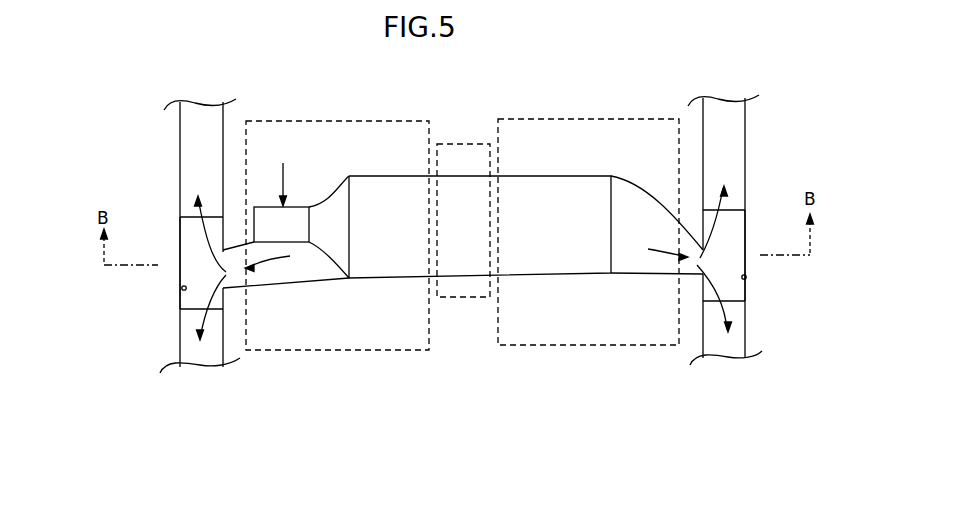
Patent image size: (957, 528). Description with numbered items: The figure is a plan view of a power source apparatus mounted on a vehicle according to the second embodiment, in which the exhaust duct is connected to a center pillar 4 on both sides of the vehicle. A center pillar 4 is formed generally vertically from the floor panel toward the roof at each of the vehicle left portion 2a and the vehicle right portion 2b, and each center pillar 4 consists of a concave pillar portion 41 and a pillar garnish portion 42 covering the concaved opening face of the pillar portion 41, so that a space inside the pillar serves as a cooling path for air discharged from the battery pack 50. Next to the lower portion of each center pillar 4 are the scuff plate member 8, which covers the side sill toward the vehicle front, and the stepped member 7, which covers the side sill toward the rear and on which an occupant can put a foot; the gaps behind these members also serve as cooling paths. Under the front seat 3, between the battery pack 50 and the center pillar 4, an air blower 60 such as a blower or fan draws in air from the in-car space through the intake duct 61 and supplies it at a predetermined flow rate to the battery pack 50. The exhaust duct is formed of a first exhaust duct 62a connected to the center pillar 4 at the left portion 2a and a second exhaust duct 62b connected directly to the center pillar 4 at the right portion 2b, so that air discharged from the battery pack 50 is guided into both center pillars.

The vehicle left portion 2a is at (180, 143).
The vehicle right portion 2b is at (745, 126).
The scuff plate member 8 is at (200, 163).
The center pillar 4 is at (178, 231).
The pillar portion 41 is at (182, 288).
The stepped member 7 is at (195, 352).
The pillar garnish portion 42 is at (225, 298).
The first exhaust duct 62a is at (282, 282).
The second exhaust duct 62b is at (632, 262).
The air blower 60 is at (298, 207).
The intake duct 61 is at (330, 193).
The battery pack 50 is at (526, 171).
The front seat 3 is at (357, 121).